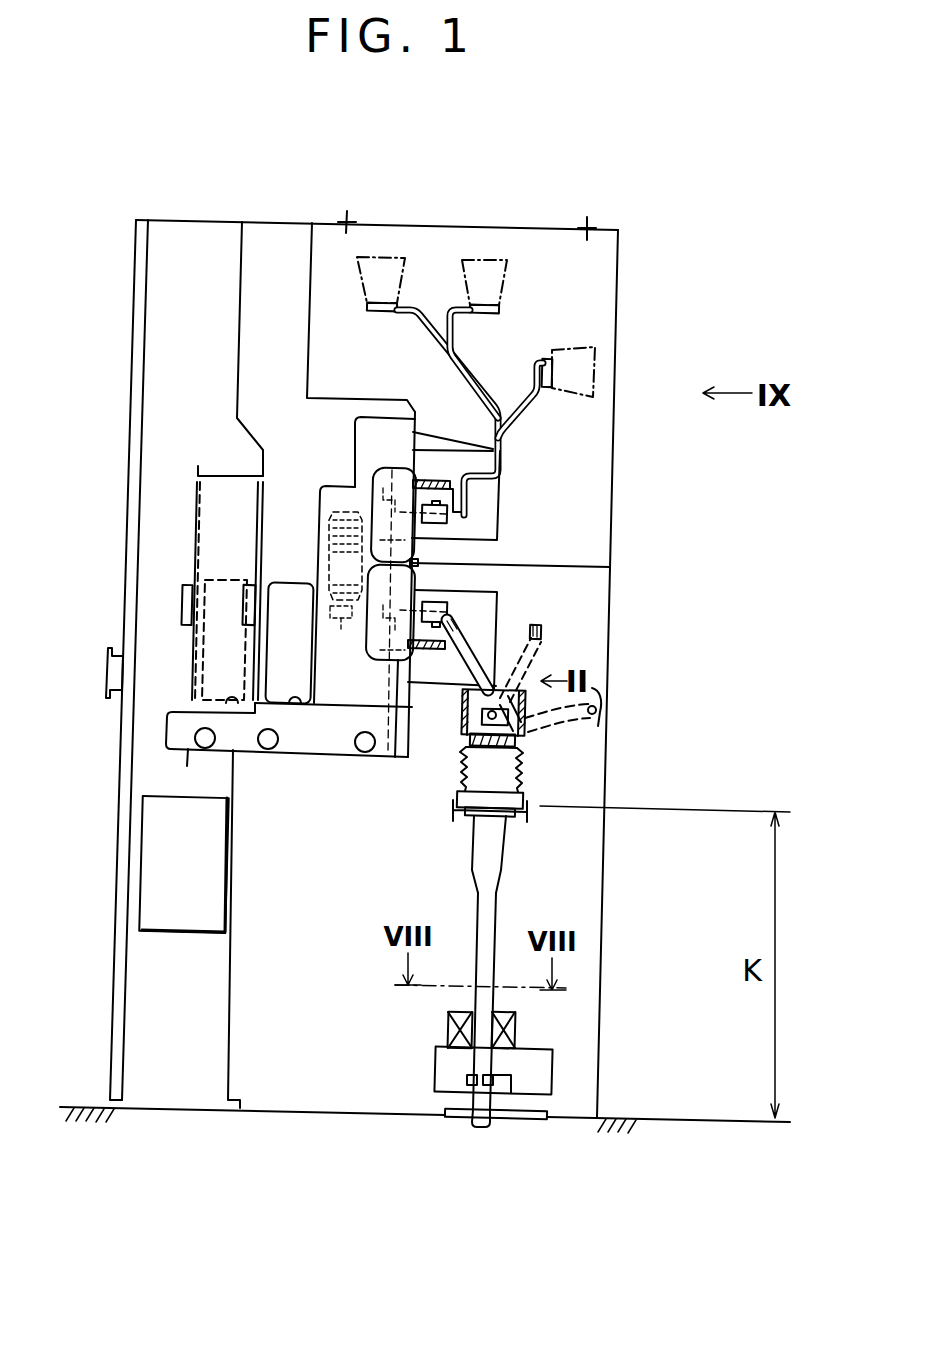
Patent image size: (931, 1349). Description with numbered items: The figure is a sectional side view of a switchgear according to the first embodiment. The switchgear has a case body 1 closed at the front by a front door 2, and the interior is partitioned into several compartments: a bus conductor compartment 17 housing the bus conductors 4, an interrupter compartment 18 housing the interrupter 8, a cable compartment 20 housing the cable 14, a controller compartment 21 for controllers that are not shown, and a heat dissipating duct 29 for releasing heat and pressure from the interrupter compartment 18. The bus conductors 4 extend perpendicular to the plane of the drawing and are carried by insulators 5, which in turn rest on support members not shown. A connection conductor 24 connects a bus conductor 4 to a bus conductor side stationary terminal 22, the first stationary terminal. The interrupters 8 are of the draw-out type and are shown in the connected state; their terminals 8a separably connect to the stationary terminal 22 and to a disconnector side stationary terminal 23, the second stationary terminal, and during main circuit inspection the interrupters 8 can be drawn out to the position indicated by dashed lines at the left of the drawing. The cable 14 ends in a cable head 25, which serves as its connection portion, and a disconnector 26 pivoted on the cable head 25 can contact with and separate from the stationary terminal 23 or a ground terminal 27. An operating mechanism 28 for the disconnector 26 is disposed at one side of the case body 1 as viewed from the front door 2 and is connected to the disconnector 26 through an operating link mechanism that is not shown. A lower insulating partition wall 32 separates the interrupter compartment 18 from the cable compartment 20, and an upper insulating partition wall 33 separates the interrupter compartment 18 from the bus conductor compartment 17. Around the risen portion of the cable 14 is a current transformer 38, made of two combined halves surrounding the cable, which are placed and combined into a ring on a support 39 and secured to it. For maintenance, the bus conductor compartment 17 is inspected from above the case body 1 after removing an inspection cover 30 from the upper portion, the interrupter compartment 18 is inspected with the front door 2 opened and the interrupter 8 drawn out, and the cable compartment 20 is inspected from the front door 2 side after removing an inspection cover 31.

The case body 1 is at (190, 216).
The front door 2 is at (134, 301).
The bus conductors 4 is at (365, 308).
The insulators 5 is at (385, 257).
The interrupters 8 is at (260, 533).
The terminals 8a is at (467, 550).
The cable 14 is at (495, 935).
The bus conductor compartment 17 is at (598, 277).
The interrupter compartment 18 is at (293, 488).
The cable compartment 20 is at (570, 860).
The controller compartment 21 is at (165, 350).
The bus conductor side stationary terminal 22 is at (457, 517).
The disconnector side stationary terminal 23 is at (455, 625).
The connection conductor 24 is at (415, 338).
The cable head 25 is at (525, 770).
The disconnector 26 is at (555, 650).
The ground terminal 27 is at (593, 707).
The operating mechanism 28 is at (141, 875).
The heat dissipating duct 29 is at (275, 262).
The inspection cover 30 is at (535, 226).
The inspection cover 31 is at (227, 1045).
The lower insulating partition wall 32 is at (425, 700).
The upper insulating partition wall 33 is at (500, 487).
The current transformer 38 is at (515, 1030).
The support 39 is at (552, 1081).